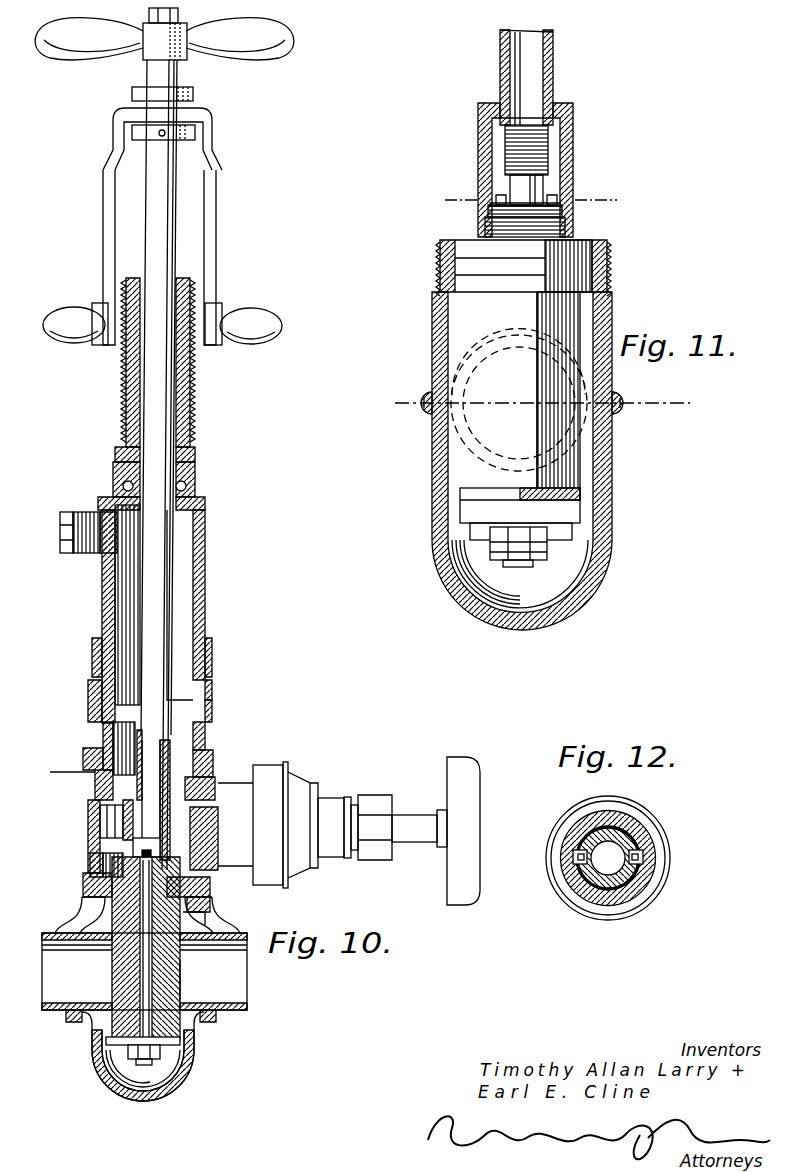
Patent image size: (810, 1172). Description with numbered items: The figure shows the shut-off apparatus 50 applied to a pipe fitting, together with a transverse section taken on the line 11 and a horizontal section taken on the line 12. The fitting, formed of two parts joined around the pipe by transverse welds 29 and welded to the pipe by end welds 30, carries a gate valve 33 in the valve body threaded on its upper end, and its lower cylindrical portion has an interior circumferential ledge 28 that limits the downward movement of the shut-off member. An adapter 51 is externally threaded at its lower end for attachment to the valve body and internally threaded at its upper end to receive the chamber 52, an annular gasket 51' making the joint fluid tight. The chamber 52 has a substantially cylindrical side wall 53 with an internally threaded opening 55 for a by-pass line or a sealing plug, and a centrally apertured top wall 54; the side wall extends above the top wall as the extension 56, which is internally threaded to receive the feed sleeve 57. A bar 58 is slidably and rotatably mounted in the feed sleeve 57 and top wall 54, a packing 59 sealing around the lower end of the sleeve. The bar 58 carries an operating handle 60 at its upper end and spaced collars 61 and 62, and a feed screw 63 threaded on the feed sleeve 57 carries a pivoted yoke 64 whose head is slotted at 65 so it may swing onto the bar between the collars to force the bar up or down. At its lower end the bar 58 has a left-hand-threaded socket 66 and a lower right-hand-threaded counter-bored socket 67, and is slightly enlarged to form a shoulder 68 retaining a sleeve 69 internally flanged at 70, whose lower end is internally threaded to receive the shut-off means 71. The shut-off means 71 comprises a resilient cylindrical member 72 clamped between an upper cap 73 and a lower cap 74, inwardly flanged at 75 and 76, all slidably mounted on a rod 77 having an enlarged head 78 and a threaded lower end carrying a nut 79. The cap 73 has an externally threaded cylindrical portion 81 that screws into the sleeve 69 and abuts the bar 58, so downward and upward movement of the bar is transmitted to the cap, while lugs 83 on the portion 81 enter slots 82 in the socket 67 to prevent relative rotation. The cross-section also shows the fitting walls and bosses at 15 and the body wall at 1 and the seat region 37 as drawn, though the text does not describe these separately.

In FIG. 10, the operating handle 60 is at (88, 45).
In FIG. 10, the collar 61 is at (196, 95).
In FIG. 10, the collar 62 is at (196, 138).
In FIG. 10, the feed screw 63 is at (246, 320).
In FIG. 10, the yoke 64 is at (218, 248).
In FIG. 10, the slot 65 is at (213, 116).
In FIG. 10, the bar 58 is at (150, 227).
In FIG. 11, the bar 58 is at (555, 82).
In FIG. 10, the feed sleeve 57 is at (195, 392).
In FIG. 10, the extension 56 is at (198, 468).
In FIG. 10, the packing 59 is at (123, 486).
In FIG. 10, the top wall 54 is at (206, 512).
In FIG. 10, the chamber 52 is at (178, 563).
In FIG. 10, the side wall 53 is at (206, 617).
In FIG. 10, the internally threaded opening 55 is at (80, 560).
In FIG. 10, the shut-off apparatus 50 is at (92, 652).
In FIG. 10, the annular gasket 51' is at (226, 688).
In FIG. 10, the adapter 51 is at (167, 701).
In FIG. 10, the internal flange 70 is at (205, 758).
In FIG. 10, the gate valve 33 is at (207, 786).
In FIG. 10, the section line 11— 11 is at (50, 779).
In FIG. 10, the seat ring 37 is at (95, 786).
In FIG. 10, the shoulder 68 is at (100, 808).
In FIG. 10, the sleeve 69 is at (123, 820).
In FIG. 12, the sleeve 69 is at (598, 816).
In FIG. 10, the socket 66 is at (103, 862).
In FIG. 11, the socket 66 is at (548, 160).
In FIG. 10, the counter-bored socket 67 is at (105, 870).
In FIG. 11, the counter-bored socket 67 is at (555, 180).
In FIG. 12, the counter-bored socket 67 is at (602, 895).
In FIG. 10, the head 78 is at (175, 836).
In FIG. 11, the head 78 is at (500, 206).
In FIG. 10, the cylindrical portion 81 is at (190, 878).
In FIG. 11, the cylindrical portion 81 is at (567, 233).
In FIG. 10, the cap 73 is at (190, 900).
In FIG. 11, the cap 73 is at (470, 250).
In FIG. 10, the inward flange 75 is at (190, 912).
In FIG. 10, the rod 77 is at (152, 920).
In FIG. 10, the valve body 1 is at (90, 910).
In FIG. 11, the valve body 1 is at (432, 338).
In FIG. 10, the shut-off means 71 is at (112, 981).
In FIG. 11, the shut-off means 71 is at (560, 383).
In FIG. 10, the cylindrical member 72 is at (192, 978).
In FIG. 11, the cylindrical member 72 is at (550, 460).
In FIG. 10, the end weld 30 is at (68, 1014).
In FIG. 10, the inward flange 76 is at (95, 1035).
In FIG. 10, the cap 74 is at (100, 1066).
In FIG. 11, the cap 74 is at (475, 512).
In FIG. 10, the nut 79 is at (135, 1060).
In FIG. 11, the nut 79 is at (545, 545).
In FIG. 10, the circumferential ledge 28 is at (176, 1060).
In FIG. 11, the circumferential ledge 28 is at (440, 575).
In FIG. 11, the lug 83 is at (497, 198).
In FIG. 12, the lug 83 is at (640, 866).
In FIG. 11, the section line 12— 12 is at (531, 203).
In FIG. 11, the slot 82 is at (562, 211).
In FIG. 12, the slot 82 is at (641, 846).
In FIG. 11, the boss 15 is at (420, 402).
In FIG. 11, the transverse weld 29 is at (432, 415).